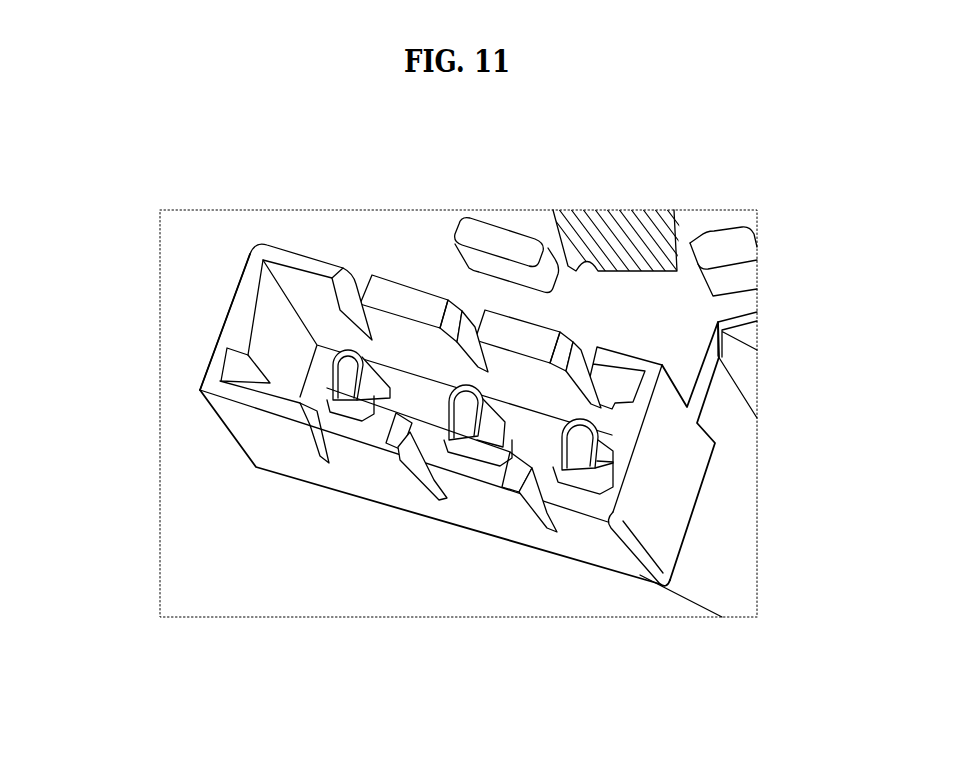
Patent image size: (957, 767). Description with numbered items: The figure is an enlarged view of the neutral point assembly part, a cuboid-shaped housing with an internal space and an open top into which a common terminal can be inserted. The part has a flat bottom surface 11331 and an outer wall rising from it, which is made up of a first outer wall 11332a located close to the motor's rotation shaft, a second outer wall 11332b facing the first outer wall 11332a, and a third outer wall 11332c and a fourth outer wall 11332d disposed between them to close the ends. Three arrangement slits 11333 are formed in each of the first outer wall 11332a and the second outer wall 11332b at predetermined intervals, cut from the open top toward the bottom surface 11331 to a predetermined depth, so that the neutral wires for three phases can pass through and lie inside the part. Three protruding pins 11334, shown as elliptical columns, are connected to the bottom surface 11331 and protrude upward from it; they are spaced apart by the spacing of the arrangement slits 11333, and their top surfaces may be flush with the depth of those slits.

The bottom surface 11331 is at (530, 450).
The first outer wall 11332a is at (297, 250).
The second outer wall 11332b is at (264, 433).
The third outer wall 11332c is at (223, 317).
The fourth outer wall 11332d is at (667, 492).
The arrangement slits 11333 is at (356, 288).
The protruding pins 11334 is at (460, 420).